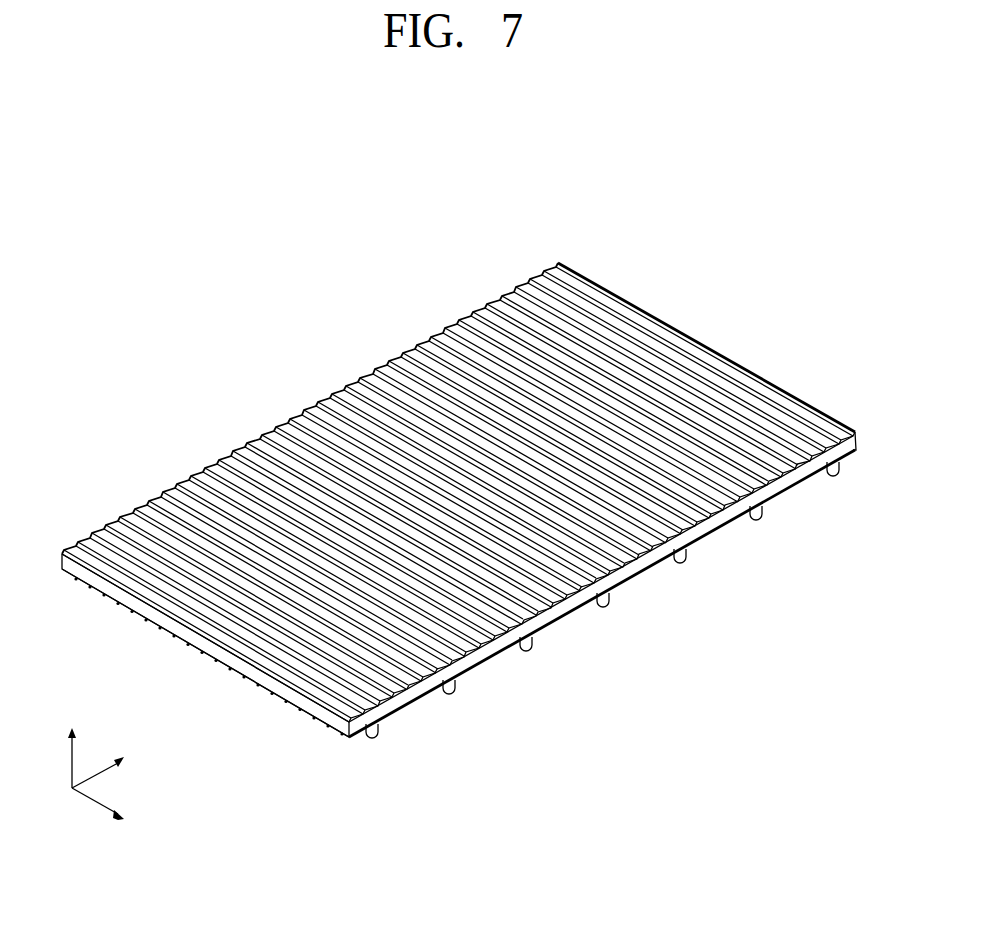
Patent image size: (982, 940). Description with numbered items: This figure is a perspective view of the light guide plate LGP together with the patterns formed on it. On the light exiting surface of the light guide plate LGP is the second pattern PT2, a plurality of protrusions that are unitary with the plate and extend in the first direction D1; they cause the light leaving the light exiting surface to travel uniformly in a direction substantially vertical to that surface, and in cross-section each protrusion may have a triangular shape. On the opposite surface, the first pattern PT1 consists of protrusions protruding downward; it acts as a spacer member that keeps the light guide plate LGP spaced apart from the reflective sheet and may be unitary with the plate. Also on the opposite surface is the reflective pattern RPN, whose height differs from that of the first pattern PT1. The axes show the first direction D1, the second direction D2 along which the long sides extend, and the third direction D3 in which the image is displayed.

The light guide plate LGP is at (288, 344).
The first pattern PT1 is at (456, 687).
The second pattern PT2 is at (250, 658).
The reflective pattern RPN is at (334, 734).
The first direction D1 is at (114, 811).
The second direction D2 is at (114, 768).
The third direction D3 is at (73, 745).